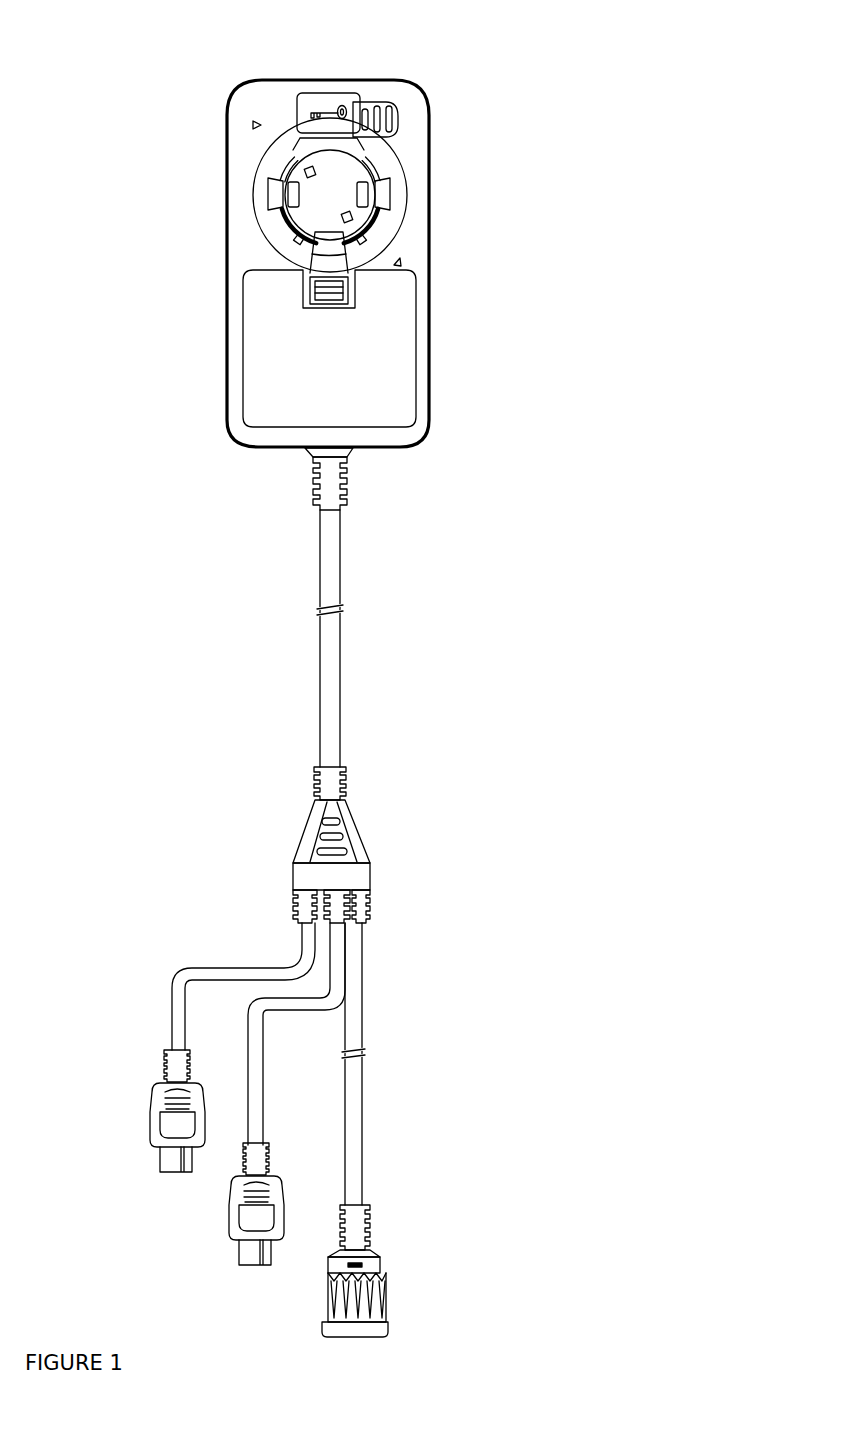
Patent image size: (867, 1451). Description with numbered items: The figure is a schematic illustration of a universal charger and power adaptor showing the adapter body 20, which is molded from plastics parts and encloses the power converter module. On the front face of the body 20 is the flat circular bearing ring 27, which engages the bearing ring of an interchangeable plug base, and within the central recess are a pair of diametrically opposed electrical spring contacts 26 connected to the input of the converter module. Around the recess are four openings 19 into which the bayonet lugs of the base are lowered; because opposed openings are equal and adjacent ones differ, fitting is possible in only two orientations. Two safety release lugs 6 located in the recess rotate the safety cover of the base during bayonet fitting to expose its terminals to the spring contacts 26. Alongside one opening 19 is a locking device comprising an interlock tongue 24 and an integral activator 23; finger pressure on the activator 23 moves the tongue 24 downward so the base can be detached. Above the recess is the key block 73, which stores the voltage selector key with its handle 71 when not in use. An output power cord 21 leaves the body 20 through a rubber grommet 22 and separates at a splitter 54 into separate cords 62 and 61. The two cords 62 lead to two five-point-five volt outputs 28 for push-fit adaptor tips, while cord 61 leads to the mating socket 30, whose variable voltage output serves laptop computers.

The adapter body 20 is at (519, 222).
The key block 73 is at (325, 98).
The handle 71 is at (404, 122).
The interlock tongue 24 is at (278, 257).
The openings 19 is at (391, 195).
The bearing ring 27 is at (285, 227).
The electrical spring contacts 26 is at (387, 185).
The safety release lugs 6 is at (303, 170).
The activator 23 is at (343, 295).
The rubber grommet 22 is at (351, 487).
The output power cord 21 is at (344, 565).
The splitter 54 is at (357, 832).
The separate cords 62 is at (187, 968).
The separate cord 61 is at (361, 1099).
The outputs 28 is at (153, 1117).
The mating socket 30 is at (381, 1264).